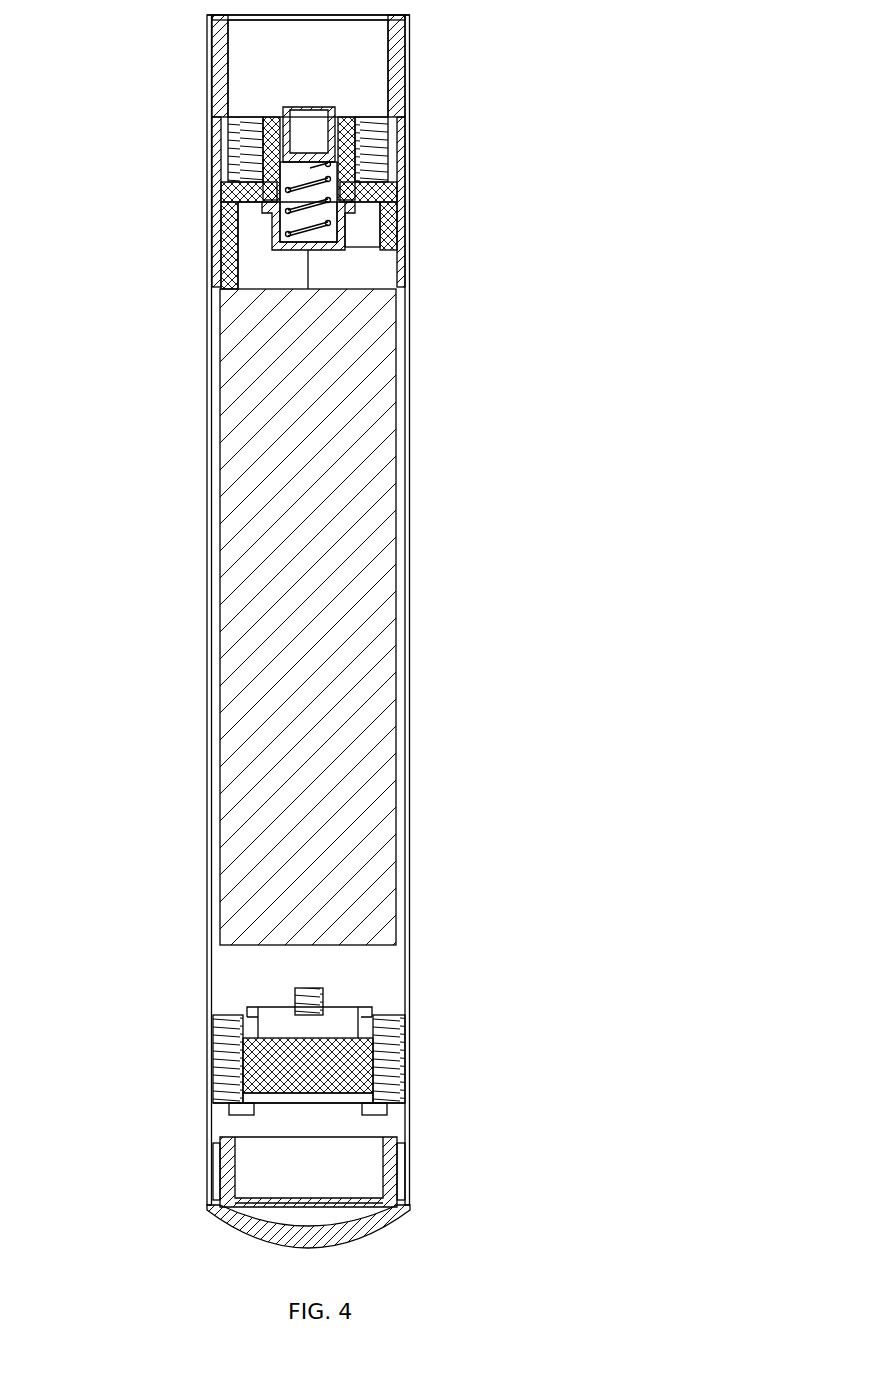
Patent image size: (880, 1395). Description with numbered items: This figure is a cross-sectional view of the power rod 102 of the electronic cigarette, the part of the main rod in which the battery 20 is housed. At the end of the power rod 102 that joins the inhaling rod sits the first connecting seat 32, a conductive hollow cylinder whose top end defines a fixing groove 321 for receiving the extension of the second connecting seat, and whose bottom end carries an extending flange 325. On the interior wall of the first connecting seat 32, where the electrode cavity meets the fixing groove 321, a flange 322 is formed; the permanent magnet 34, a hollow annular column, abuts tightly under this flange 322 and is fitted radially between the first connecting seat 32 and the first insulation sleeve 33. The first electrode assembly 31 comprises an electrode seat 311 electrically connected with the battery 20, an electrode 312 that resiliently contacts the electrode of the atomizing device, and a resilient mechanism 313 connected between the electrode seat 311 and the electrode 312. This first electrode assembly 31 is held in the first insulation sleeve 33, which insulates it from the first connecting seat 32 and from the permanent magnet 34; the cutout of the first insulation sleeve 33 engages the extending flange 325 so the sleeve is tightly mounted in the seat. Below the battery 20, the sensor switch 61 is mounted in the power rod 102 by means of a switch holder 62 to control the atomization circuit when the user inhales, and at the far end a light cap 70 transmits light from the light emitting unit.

The power rod 102 is at (208, 690).
The first connecting seat 32 is at (410, 72).
The fixing groove 321 is at (282, 72).
The flange 322 is at (212, 125).
The permanent magnet 34 is at (213, 157).
The first insulation sleeve 33 is at (216, 200).
The first electrode assembly 31 is at (490, 157).
The electrode seat 311 is at (382, 215).
The electrode 312 is at (348, 157).
The resilient mechanism 313 is at (345, 212).
The extending flange 325 is at (400, 258).
The battery 20 is at (368, 733).
The switch holder 62 is at (400, 1025).
The sensor switch 61 is at (375, 1067).
The light cap 70 is at (393, 1195).